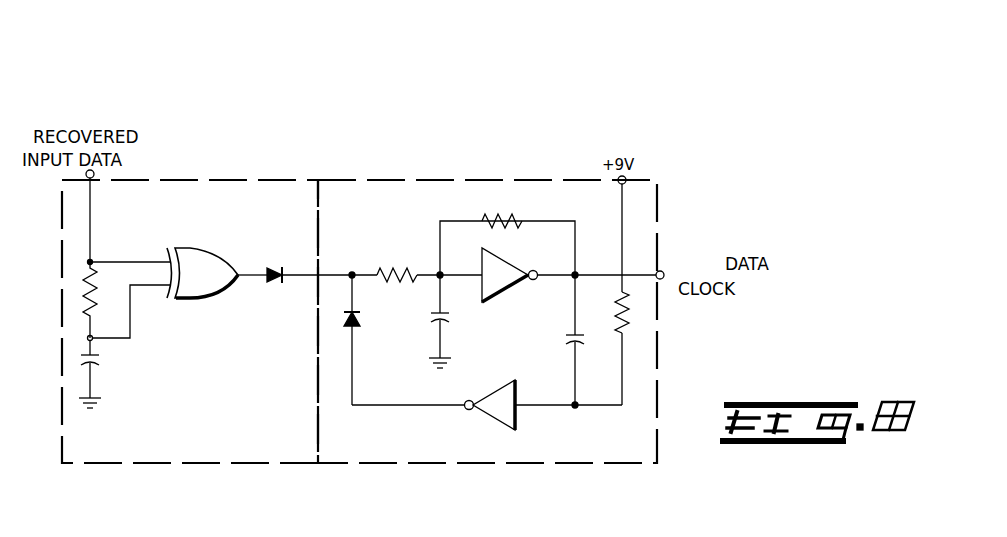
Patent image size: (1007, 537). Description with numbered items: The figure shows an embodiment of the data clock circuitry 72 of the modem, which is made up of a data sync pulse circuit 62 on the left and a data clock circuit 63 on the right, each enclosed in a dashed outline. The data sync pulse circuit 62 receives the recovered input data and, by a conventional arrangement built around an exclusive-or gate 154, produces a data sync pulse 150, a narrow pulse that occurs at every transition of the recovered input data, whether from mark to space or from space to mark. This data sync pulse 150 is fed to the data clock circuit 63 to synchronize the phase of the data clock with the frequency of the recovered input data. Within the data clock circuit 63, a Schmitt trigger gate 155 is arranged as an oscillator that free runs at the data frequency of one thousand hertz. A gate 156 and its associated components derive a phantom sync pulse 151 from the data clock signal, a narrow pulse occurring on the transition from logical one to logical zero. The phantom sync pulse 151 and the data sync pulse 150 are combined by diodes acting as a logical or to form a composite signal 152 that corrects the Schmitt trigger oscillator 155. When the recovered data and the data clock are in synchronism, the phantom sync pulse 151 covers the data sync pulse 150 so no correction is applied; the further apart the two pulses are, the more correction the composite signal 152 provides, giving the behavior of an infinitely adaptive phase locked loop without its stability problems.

The data clock circuitry 72 is at (430, 120).
The data sync pulse circuit 62 is at (238, 180).
The data clock circuit 63 is at (486, 180).
The exclusive-or gate 154 is at (189, 250).
The data sync pulse 150 is at (246, 282).
The composite signal 152 is at (357, 268).
The Schmitt trigger gate 155 is at (488, 300).
The phantom sync pulse 151 is at (370, 406).
The gate 156 is at (512, 414).